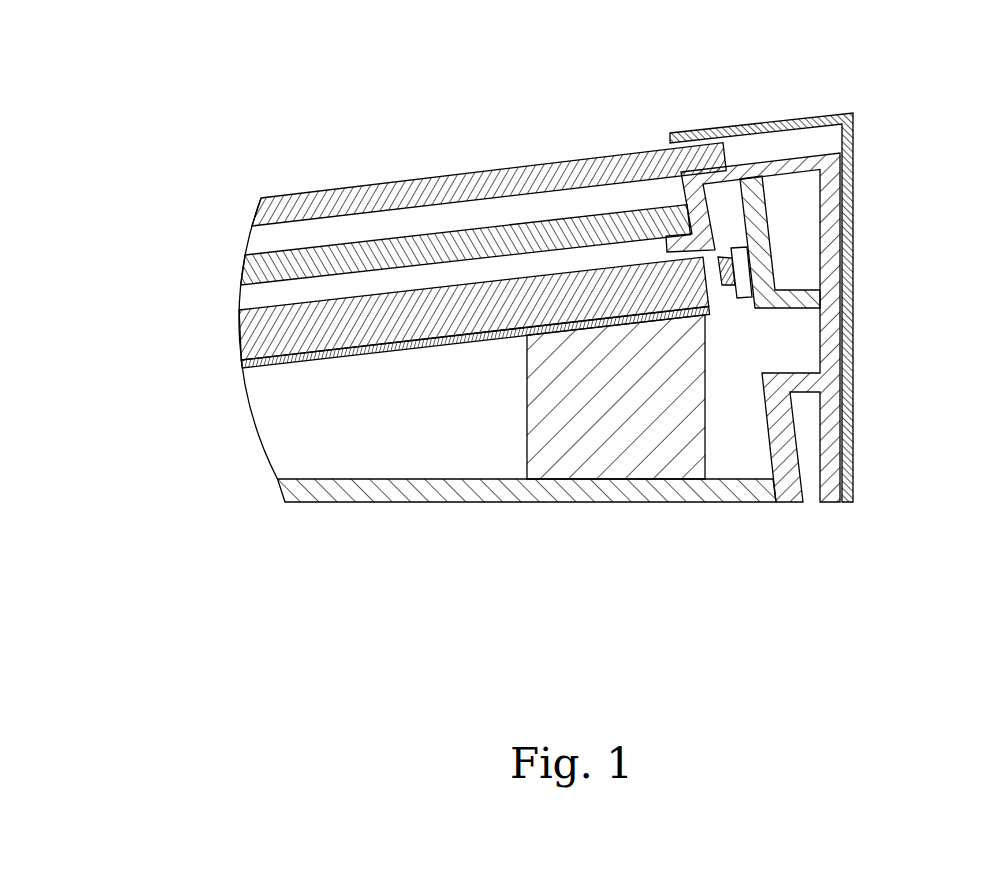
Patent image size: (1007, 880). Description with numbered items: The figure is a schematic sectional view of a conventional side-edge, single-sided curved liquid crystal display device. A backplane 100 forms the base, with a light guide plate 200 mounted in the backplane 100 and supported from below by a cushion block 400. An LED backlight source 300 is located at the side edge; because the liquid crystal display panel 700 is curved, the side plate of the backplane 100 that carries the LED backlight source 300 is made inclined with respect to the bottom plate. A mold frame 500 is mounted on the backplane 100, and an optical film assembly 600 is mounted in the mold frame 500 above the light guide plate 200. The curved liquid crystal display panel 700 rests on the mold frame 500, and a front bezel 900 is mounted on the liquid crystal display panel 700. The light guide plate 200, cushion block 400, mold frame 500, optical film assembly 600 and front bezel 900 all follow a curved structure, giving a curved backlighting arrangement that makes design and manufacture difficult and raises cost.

The backplane 100 is at (728, 492).
The light guide plate 200 is at (320, 330).
The LED backlight source 300 is at (740, 273).
The cushion block 400 is at (583, 407).
The mold frame 500 is at (828, 207).
The optical film assembly 600 is at (290, 270).
The liquid crystal display panel 700 is at (333, 190).
The front bezel 900 is at (807, 120).